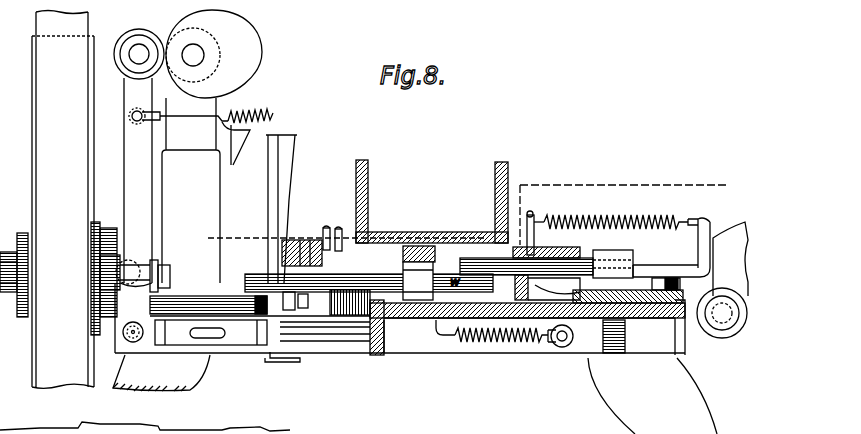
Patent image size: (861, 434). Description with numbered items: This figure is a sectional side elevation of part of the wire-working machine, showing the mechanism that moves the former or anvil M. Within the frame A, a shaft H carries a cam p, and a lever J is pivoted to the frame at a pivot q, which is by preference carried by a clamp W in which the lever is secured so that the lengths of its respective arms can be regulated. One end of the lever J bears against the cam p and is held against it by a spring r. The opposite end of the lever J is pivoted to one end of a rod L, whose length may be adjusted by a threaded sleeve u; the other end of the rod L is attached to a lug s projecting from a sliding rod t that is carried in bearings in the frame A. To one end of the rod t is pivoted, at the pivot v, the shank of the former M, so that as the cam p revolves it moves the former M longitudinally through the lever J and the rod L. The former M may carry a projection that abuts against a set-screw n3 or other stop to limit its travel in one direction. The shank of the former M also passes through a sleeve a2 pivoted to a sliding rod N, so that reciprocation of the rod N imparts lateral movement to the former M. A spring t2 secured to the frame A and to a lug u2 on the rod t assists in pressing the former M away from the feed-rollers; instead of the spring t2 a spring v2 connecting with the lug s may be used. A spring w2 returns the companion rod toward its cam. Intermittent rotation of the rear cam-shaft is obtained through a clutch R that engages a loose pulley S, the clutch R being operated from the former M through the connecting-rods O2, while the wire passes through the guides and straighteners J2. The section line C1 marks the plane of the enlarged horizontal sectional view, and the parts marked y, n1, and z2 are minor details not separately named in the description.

The loose pulley S is at (63, 200).
The clutch R is at (104, 270).
The lever J is at (136, 154).
The spring r is at (206, 131).
The cam p is at (214, 54).
The shaft H is at (191, 49).
The pivot q is at (125, 272).
The clamp W is at (165, 262).
The center line C1 is at (476, 212).
The frame A is at (356, 368).
The spring w2 is at (335, 231).
The connecting-rods O2 is at (302, 254).
The former M is at (369, 283).
The sliding rod N is at (410, 254).
The sleeve a2 is at (418, 281).
The pivot v is at (546, 261).
The bracket y is at (547, 287).
The nut n1 is at (297, 301).
The collar z2 is at (350, 302).
The set-screw n3 is at (260, 328).
The spring t2 is at (607, 227).
The lug u2 is at (702, 234).
The sliding rod t is at (671, 269).
The wire guides and straighteners J2 is at (685, 352).
The spring v2 is at (500, 345).
The lug s is at (575, 336).
The threaded sleeve u is at (161, 337).
The rod L is at (268, 352).